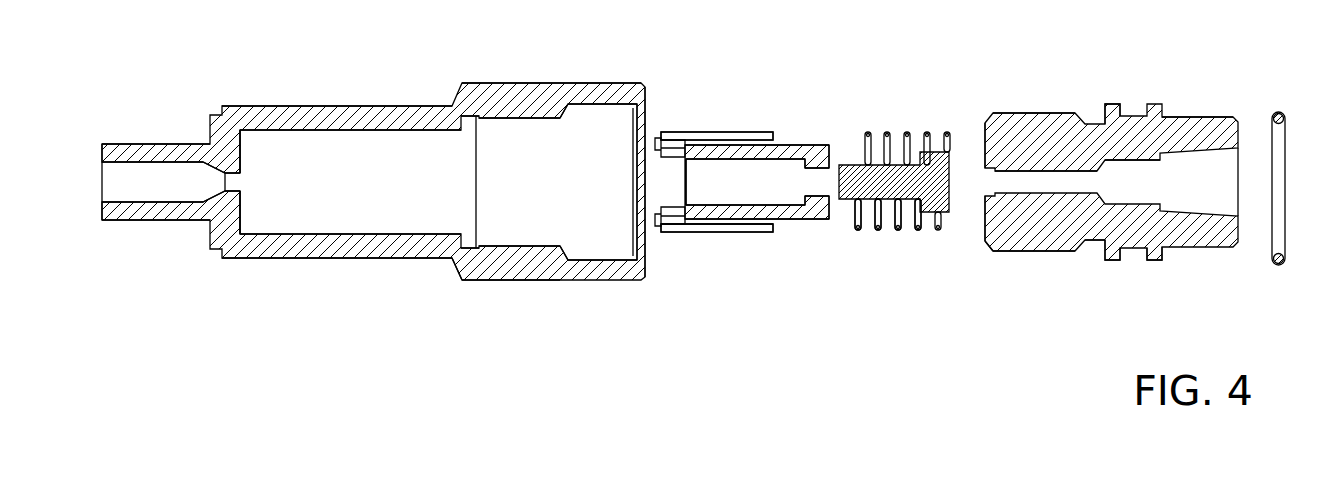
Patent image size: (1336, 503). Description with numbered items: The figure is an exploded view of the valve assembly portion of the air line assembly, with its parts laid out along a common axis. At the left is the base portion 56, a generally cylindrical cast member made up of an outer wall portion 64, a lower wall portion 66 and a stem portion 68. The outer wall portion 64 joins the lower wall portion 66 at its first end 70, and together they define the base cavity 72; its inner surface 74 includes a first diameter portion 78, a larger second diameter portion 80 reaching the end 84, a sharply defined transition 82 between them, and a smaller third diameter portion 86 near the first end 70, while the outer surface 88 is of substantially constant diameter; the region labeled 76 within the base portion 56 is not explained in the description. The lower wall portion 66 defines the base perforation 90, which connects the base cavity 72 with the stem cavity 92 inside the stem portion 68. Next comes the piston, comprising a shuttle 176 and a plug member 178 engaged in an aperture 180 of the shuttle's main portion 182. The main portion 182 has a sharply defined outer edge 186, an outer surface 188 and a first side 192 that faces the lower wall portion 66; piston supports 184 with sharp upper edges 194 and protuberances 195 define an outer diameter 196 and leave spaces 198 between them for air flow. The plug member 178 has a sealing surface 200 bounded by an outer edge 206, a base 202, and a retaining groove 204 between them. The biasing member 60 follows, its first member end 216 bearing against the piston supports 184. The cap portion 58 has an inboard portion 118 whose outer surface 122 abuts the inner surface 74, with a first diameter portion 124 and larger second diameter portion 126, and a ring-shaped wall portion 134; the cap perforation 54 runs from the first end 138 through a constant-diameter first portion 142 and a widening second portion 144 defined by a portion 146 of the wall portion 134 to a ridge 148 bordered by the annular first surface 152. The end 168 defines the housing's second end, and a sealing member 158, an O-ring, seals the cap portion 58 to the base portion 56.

The cap perforation 54 is at (1060, 150).
The base portion 56 is at (607, 83).
The cap portion 58 is at (1198, 117).
The biasing member 60 is at (885, 165).
The outer wall portion 64 is at (513, 83).
The lower wall portion 66 is at (233, 157).
The stem portion 68 is at (148, 220).
The first end 70 is at (238, 171).
The base cavity 72 is at (304, 194).
The inner surface 74 is at (392, 106).
The intermediate bore 76 is at (490, 122).
The first diameter portion 78 is at (465, 250).
The second diameter portion 80 is at (600, 262).
The transition 82 is at (558, 262).
The end 84 is at (655, 280).
The third diameter portion 86 is at (392, 250).
The outer surface 88 is at (320, 259).
The base perforation 90 is at (229, 172).
The stem cavity 92 is at (120, 194).
The inboard portion 118 is at (1091, 252).
The outer surface 122 is at (1155, 260).
The first diameter portion 124 is at (986, 246).
The second diameter portion 126 is at (1112, 260).
The wall portion 134 is at (1003, 165).
The first end 138 is at (1143, 122).
The first portion 142 is at (1060, 251).
The second portion 144 is at (1013, 140).
The portion 146 is at (1032, 160).
The ridge 148 is at (985, 127).
The first surface 152 is at (983, 240).
The sealing member 158 is at (1280, 112).
The end 168 is at (1240, 130).
The shuttle 176 is at (740, 132).
The plug member 178 is at (830, 160).
The aperture 180 is at (828, 146).
The main portion 182 is at (812, 219).
The piston supports 184 is at (676, 132).
The outer edge 186 is at (834, 150).
The outer surface 188 is at (806, 145).
The first side 192 is at (805, 203).
The upper edge 194 is at (788, 150).
The protuberance 195 is at (660, 138).
The outer diameter 196 is at (752, 232).
The spaces 198 is at (647, 184).
The sealing surface 200 is at (957, 150).
The base 202 is at (878, 230).
The retaining groove 204 is at (898, 230).
The outer edge 206 is at (930, 230).
The first member end 216 is at (857, 230).